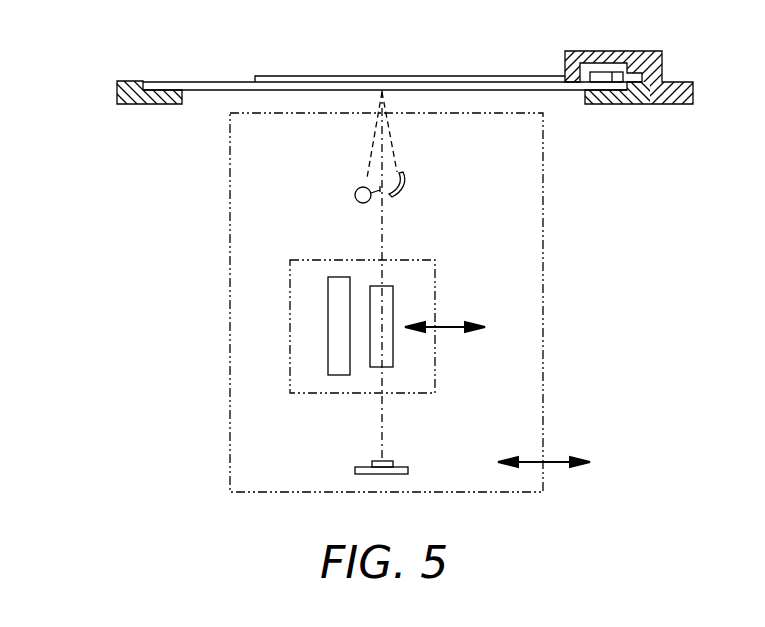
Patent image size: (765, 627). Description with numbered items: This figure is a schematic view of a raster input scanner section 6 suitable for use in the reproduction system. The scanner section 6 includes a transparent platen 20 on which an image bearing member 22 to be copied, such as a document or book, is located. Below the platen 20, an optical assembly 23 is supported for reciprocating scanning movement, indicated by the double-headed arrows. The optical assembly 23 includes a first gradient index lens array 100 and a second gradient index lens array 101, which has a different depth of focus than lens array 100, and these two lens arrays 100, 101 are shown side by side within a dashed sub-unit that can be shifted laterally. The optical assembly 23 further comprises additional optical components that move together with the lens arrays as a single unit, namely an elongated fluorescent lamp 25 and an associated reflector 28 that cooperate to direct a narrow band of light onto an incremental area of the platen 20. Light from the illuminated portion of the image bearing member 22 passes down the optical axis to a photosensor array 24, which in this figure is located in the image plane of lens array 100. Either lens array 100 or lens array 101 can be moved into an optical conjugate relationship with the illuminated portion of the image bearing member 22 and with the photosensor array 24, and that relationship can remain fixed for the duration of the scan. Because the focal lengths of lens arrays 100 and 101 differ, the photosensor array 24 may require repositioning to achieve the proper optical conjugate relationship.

The scanner section 6 is at (133, 50).
The transparent platen 20 is at (225, 85).
The image bearing member 22 is at (375, 80).
The optical assembly 23 is at (545, 375).
The photosensor array 24 is at (380, 474).
The elongated fluorescent lamp 25 is at (358, 191).
The reflector 28 is at (400, 192).
The first gradient index lens array 100 is at (393, 357).
The second gradient index lens array 101 is at (330, 357).